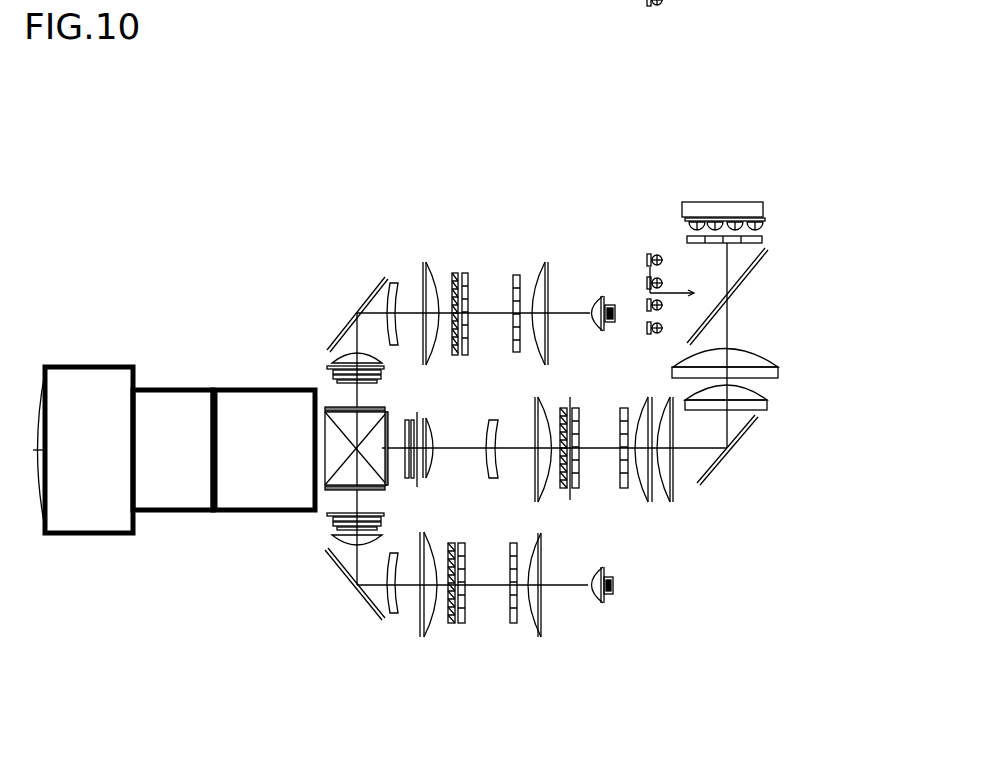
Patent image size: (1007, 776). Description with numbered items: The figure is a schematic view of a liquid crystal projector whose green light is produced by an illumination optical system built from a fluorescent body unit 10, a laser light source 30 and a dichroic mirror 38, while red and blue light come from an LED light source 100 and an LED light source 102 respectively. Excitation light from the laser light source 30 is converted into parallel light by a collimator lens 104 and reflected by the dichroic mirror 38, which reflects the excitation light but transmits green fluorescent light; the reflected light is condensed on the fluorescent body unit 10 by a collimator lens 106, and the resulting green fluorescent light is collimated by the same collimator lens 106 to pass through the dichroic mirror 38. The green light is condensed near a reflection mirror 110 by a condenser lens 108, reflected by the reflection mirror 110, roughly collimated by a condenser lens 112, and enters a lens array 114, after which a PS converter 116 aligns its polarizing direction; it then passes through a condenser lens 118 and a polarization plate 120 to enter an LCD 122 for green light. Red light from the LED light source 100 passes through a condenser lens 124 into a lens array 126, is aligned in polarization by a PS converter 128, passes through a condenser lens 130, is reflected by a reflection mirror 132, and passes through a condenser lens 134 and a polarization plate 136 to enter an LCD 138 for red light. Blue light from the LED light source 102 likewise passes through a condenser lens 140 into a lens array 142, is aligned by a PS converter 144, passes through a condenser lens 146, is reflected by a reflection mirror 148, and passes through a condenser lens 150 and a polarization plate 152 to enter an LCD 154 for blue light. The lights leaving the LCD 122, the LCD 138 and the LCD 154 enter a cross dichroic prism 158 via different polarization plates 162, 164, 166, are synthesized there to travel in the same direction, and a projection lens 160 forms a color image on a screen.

The fluorescent body unit 10 is at (740, 208).
The laser light source 30 is at (650, 258).
The dichroic mirror 38 is at (752, 262).
The LED light source 100 is at (613, 303).
The LED light source 102 is at (608, 596).
The collimator lens 104 is at (660, 258).
The collimator lens 106 is at (765, 240).
The condenser lens 108 is at (767, 405).
The reflection mirror 110 is at (757, 420).
The condenser lens 112 is at (622, 489).
The lens array 114 is at (578, 489).
The PS converter 116 is at (565, 489).
The condenser lens 118 is at (428, 478).
The polarization plate 120 is at (418, 414).
The LCD for green light 122 is at (410, 420).
The condenser lens 124 is at (603, 297).
The lens array 126 is at (517, 277).
The PS converter 128 is at (455, 273).
The condenser lens 130 is at (430, 277).
The reflection mirror 132 is at (370, 297).
The condenser lens 134 is at (367, 352).
The polarization plate 136 is at (340, 370).
The LCD for red light 138 is at (330, 405).
The condenser lens 140 is at (592, 604).
The lens array 142 is at (513, 624).
The PS converter 144 is at (450, 624).
The condenser lens 146 is at (391, 614).
The reflection mirror 148 is at (372, 606).
The condenser lens 150 is at (333, 560).
The polarization plate 152 is at (333, 541).
The LCD for blue light 154 is at (330, 522).
The cross dichroic prism 158 is at (337, 440).
The projection lens 160 is at (88, 385).
The polarization plate 162 is at (388, 478).
The polarization plate 164 is at (333, 377).
The polarization plate 166 is at (310, 506).